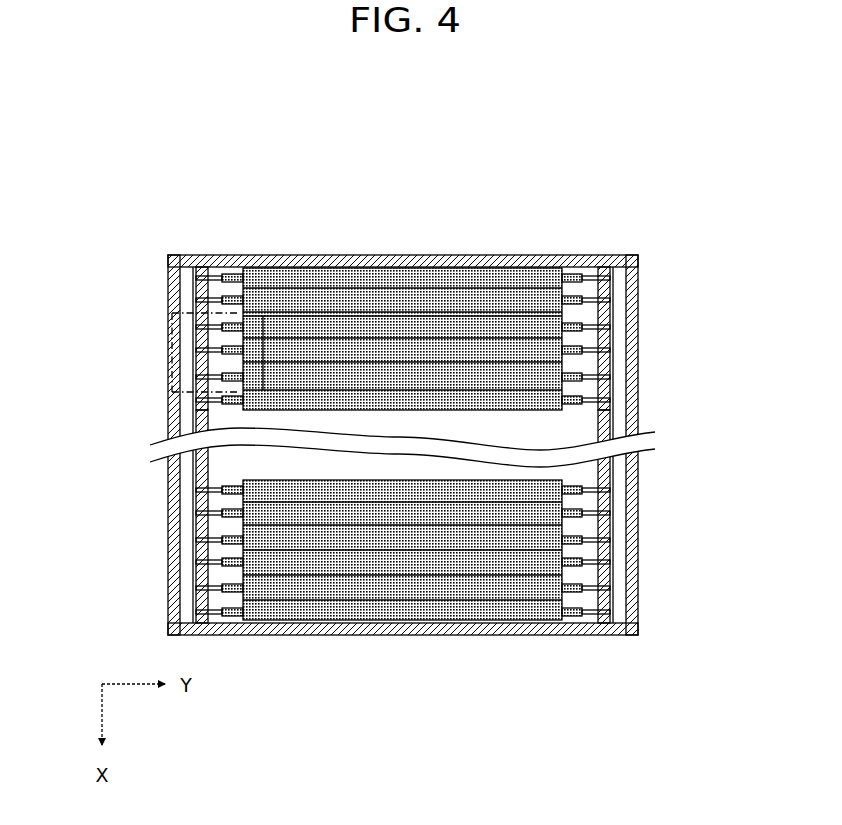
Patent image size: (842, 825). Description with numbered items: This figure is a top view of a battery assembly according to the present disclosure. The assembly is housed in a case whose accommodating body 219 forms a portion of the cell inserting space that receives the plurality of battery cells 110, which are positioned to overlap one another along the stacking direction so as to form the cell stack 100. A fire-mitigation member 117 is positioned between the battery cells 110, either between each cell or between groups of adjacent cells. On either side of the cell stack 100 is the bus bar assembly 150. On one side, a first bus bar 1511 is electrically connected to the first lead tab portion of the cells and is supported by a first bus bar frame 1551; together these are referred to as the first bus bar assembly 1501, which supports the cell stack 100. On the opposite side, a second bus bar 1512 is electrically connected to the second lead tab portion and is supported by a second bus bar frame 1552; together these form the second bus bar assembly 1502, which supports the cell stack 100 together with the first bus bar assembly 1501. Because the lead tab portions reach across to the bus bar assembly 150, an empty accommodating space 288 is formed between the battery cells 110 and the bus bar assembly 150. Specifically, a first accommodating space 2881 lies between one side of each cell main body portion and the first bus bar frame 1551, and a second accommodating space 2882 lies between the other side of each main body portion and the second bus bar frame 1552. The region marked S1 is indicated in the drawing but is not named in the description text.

The cell stack 100 is at (401, 265).
The battery cell 110 is at (452, 267).
The fire-mitigation member 117 is at (505, 314).
The bus bar assembly 150 is at (603, 262).
The accommodating body 219 is at (638, 329).
The accommodating space 288 is at (448, 410).
The first accommodating space 2881 is at (222, 338).
The second accommodating space 2882 is at (578, 338).
The first bus bar assembly 1501 is at (100, 372).
The first bus bar 1511 is at (198, 386).
The first bus bar frame 1551 is at (204, 418).
The second bus bar assembly 1502 is at (718, 372).
The second bus bar 1512 is at (610, 386).
The second bus bar frame 1552 is at (610, 419).
The accommodating space S1 is at (172, 333).